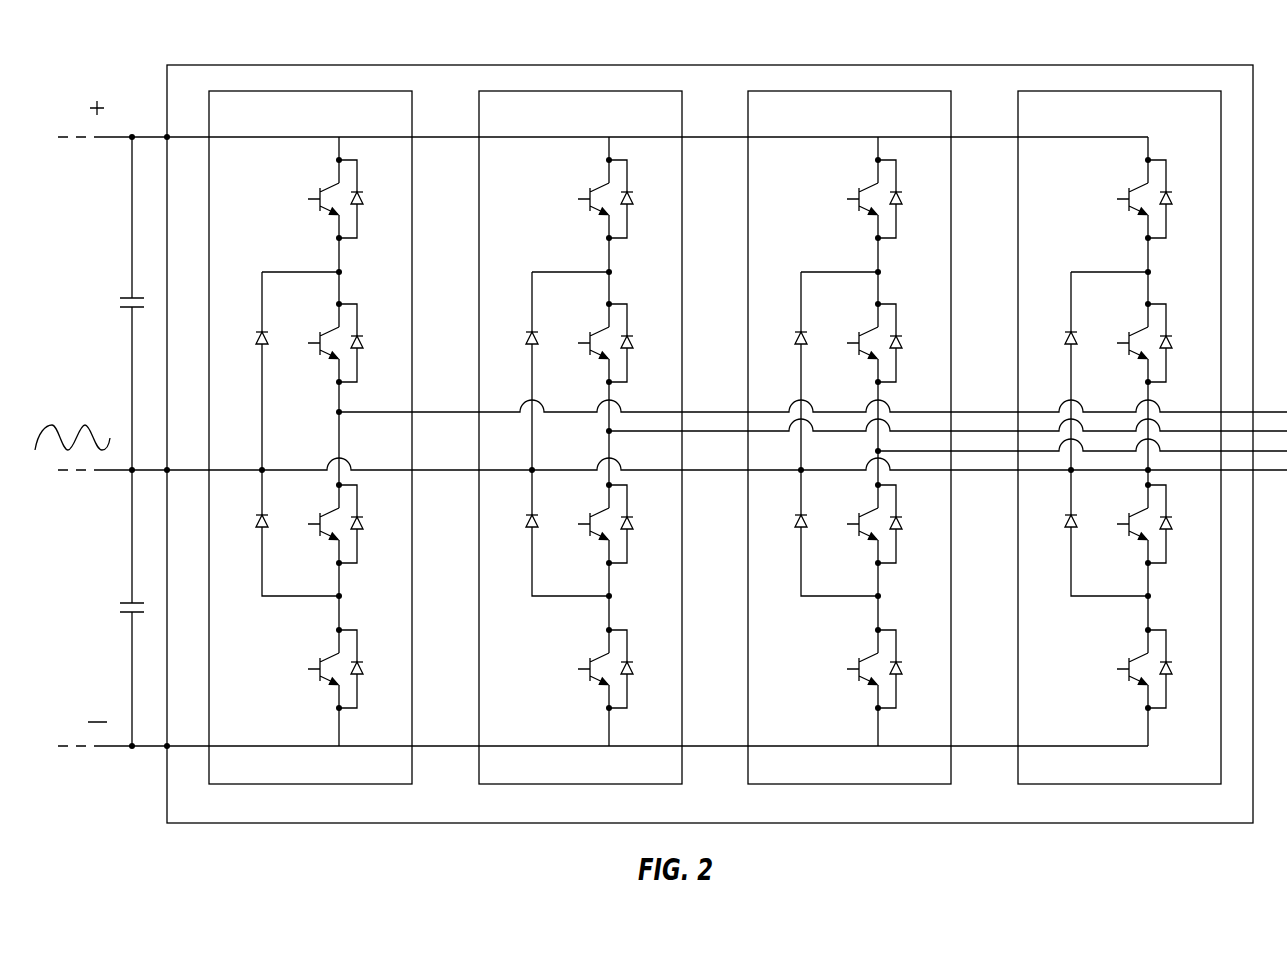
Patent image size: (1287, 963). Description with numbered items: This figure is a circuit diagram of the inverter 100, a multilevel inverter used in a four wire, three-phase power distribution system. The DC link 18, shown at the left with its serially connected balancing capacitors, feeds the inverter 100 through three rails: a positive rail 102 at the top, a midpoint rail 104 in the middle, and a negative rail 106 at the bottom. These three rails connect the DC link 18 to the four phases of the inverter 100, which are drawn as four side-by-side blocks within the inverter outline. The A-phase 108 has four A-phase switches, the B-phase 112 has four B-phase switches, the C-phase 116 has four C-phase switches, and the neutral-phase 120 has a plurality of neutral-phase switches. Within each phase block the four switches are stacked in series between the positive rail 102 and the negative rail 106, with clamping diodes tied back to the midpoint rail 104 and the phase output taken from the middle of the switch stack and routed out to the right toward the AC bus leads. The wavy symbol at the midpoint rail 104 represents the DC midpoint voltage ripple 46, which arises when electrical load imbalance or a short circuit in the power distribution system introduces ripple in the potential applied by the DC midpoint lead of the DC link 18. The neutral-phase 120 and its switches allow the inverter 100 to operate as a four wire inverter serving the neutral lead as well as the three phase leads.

The DC link 18 is at (71, 778).
The DC midpoint voltage ripple 46 is at (55, 425).
The inverter 100 is at (268, 824).
The positive rail 102 is at (165, 136).
The midpoint rail 104 is at (166, 471).
The negative rail 106 is at (166, 747).
The A-phase 108 is at (268, 125).
The B-phase 112 is at (536, 125).
The C-phase 116 is at (805, 125).
The neutral-phase 120 is at (1075, 125).